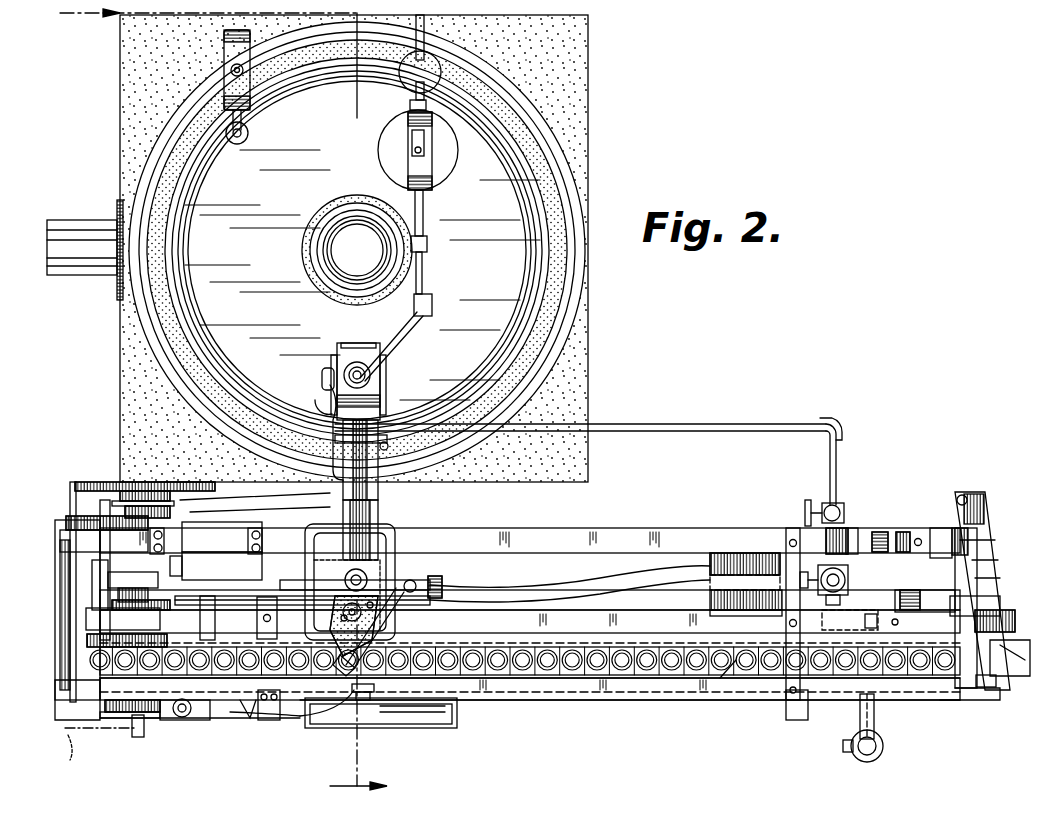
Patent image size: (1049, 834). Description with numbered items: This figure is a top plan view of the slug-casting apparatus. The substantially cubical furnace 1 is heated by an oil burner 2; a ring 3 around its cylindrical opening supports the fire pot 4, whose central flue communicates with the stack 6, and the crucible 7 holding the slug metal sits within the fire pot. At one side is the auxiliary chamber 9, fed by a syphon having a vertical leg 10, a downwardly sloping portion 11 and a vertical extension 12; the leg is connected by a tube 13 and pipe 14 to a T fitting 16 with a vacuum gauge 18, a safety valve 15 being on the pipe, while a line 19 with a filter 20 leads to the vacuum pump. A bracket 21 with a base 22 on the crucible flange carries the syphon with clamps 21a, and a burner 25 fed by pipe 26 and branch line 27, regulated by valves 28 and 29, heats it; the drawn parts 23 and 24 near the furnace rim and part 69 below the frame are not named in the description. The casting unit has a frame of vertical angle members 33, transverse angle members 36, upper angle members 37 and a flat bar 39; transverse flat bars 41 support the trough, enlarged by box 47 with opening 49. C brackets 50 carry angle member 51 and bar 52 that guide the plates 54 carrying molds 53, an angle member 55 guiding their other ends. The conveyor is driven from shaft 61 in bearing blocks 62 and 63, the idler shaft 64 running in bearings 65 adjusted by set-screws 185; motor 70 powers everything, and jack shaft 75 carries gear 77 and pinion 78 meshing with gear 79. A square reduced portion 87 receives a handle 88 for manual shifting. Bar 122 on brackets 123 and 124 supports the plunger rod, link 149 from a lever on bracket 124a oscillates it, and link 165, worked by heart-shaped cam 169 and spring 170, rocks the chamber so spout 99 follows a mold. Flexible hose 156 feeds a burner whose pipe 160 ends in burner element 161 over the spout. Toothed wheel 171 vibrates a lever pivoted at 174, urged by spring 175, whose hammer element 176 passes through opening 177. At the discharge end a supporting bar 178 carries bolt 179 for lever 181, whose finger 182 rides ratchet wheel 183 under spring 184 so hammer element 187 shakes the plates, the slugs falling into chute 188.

The furnace 1 is at (578, 358).
The oil burner 2 is at (62, 274).
The ring 3 is at (346, 770).
The fire pot 4 is at (553, 185).
The stack 6 is at (380, 252).
The crucible 7 is at (165, 243).
The auxiliary chamber 9 is at (397, 558).
The vertical leg 10 is at (372, 372).
The downwardly sloping portion 11 is at (380, 524).
The vertical extension 12 is at (405, 580).
The tube or hose 13 is at (390, 330).
The pipe 14 is at (426, 205).
The safety valve 15 is at (433, 308).
The T fitting 16 is at (412, 150).
The vacuum gauge 18 is at (410, 137).
The line 19 is at (400, 75).
The filter 20 is at (440, 128).
The bracket 21 is at (378, 492).
The clamps or straps 21a is at (324, 370).
The base 22 is at (388, 450).
The roller 23 is at (249, 136).
The bracket 24 is at (243, 80).
The burner 25 is at (320, 378).
The pipe 26 is at (835, 565).
The branch line 27 is at (826, 448).
The valve 28 is at (806, 508).
The valve 29 is at (832, 560).
The vertical angle members 33 is at (56, 545).
The transverse angle members 36 is at (445, 585).
The angle members 37 is at (652, 533).
The flat bar 39 is at (70, 690).
The flat bars 41 is at (788, 530).
The box-like member 47 is at (447, 728).
The opening 49 is at (452, 716).
The C brackets 50 is at (272, 720).
The angle member 51 is at (660, 692).
The bar 52 is at (580, 690).
The molds 53 is at (722, 676).
The plate 54 is at (648, 660).
The angle member 55 is at (553, 648).
The shaft 61 is at (130, 592).
The bearing block 62 is at (95, 540).
The bearing block 63 is at (86, 619).
The shaft 64 is at (934, 528).
The bearings 65 is at (950, 528).
The bracket 69 is at (876, 720).
The motor 70 is at (710, 566).
The jack shaft 75 is at (92, 580).
The gear 77 is at (66, 522).
The pinion 78 is at (87, 640).
The gear 79 is at (210, 618).
The reduced portion 87 is at (142, 737).
The handle 88 is at (114, 733).
The spout portion 99 is at (352, 692).
The bar 122 is at (240, 578).
The bracket 123 is at (280, 528).
The bracket 124 is at (177, 505).
The bracket 124a is at (137, 617).
The link 149 is at (222, 598).
The flexible hose 156 is at (566, 597).
The pipe 160 is at (400, 612).
The burner element 161 is at (450, 714).
The link 165 is at (320, 510).
The heart-shaped cam 169 is at (120, 496).
The spring 170 is at (96, 482).
The toothed wheel 171 is at (105, 706).
The pivot 174 is at (200, 722).
The spring 175 is at (250, 720).
The hammer element 176 is at (362, 700).
The opening 177 is at (352, 692).
The supporting bar 178 is at (970, 495).
The bolt 179 is at (966, 497).
The lever 181 is at (985, 562).
The finger 182 is at (990, 580).
The ratchet wheel 183 is at (926, 606).
The spring 184 is at (1000, 620).
The set-screws 185 is at (866, 622).
The hammer element 187 is at (988, 688).
The chute 188 is at (1025, 676).